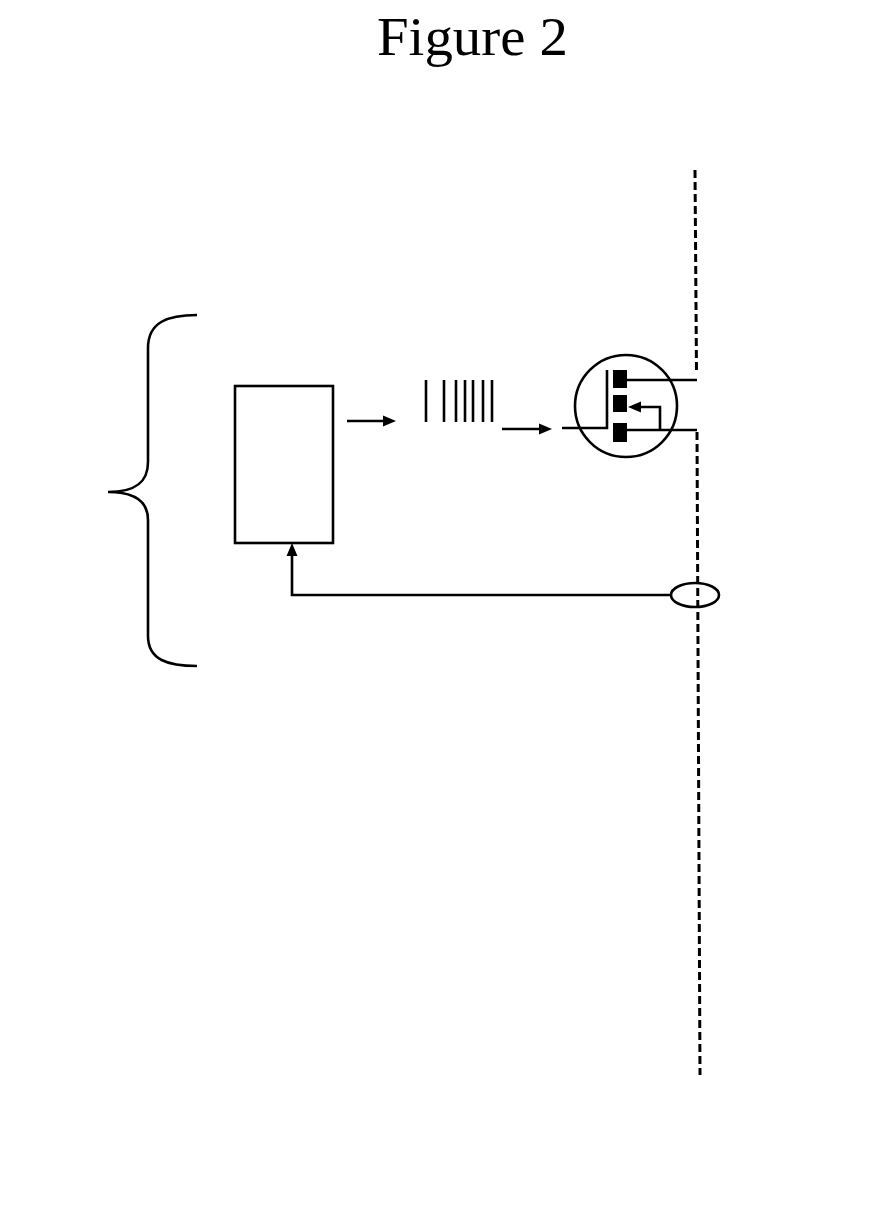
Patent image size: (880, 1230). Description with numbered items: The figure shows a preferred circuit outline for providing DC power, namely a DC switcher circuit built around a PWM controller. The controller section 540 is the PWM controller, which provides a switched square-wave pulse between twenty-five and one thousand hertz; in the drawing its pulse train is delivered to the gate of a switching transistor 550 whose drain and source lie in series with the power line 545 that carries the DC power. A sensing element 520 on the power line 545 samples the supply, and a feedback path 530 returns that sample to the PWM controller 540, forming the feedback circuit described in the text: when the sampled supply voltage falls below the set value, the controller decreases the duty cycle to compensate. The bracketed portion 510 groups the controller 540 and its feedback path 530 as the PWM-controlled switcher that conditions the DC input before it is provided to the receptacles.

The power control circuit 510 is at (108, 492).
The current sensor 520 is at (722, 594).
The feedback signal line 530 is at (479, 569).
The pulse width modulator 540 is at (284, 445).
The power line 545 is at (689, 606).
The MOSFET transistor 550 is at (650, 387).